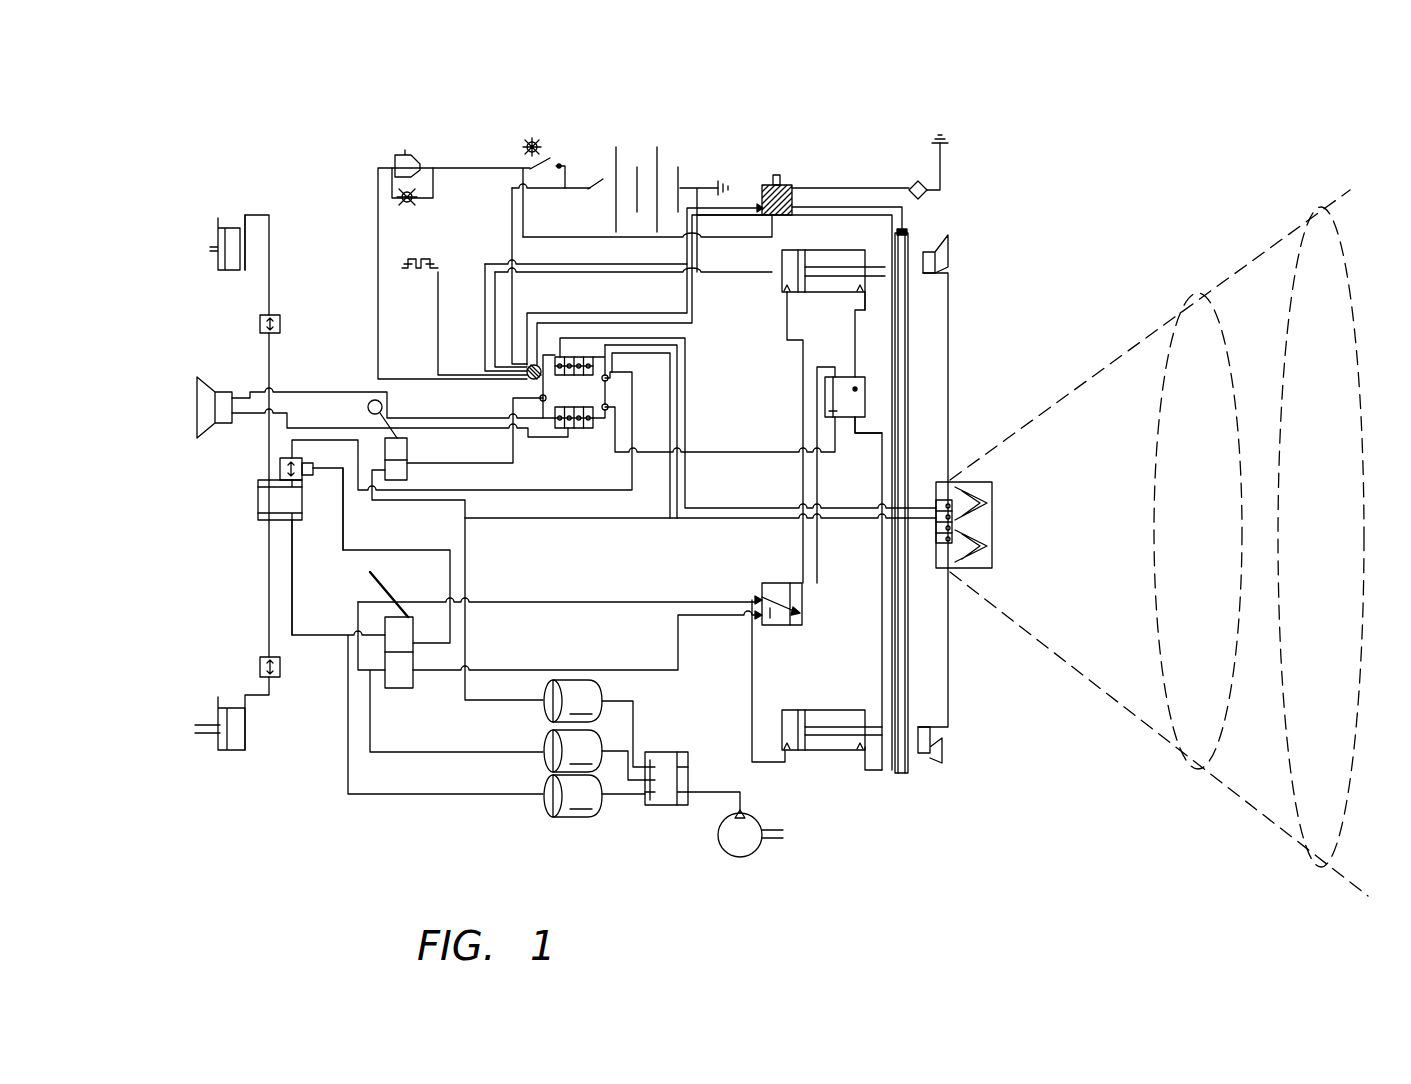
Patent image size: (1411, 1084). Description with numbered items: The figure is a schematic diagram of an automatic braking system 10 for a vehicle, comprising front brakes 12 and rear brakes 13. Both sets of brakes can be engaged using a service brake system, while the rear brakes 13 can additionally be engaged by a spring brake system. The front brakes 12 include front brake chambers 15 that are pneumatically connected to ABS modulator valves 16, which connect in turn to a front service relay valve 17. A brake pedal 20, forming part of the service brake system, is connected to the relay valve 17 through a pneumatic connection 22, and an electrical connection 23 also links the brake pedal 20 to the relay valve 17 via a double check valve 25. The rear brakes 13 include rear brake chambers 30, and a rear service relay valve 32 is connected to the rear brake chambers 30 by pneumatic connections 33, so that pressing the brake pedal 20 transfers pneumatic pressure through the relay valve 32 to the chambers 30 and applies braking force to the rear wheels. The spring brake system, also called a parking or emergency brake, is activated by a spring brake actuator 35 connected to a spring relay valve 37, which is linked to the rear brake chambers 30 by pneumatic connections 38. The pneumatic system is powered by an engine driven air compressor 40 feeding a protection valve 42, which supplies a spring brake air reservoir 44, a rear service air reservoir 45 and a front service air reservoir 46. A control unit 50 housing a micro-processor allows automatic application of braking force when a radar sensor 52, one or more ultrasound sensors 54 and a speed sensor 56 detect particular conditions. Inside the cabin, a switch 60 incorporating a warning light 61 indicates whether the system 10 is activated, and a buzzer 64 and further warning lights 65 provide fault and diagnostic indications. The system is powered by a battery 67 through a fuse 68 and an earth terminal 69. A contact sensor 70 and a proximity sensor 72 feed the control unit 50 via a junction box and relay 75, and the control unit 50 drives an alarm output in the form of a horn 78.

The braking system 10 is at (1084, 229).
The front brakes 12 is at (237, 762).
The rear brakes 13 is at (877, 779).
The front brake chambers 15 is at (228, 230).
The ABS modulator valves 16 is at (280, 315).
The front service relay valve 17 is at (258, 502).
The brake pedal 20 is at (370, 572).
The pneumatic connection 22 is at (287, 588).
The electrical connection 23 is at (343, 535).
The double check valve 25 is at (280, 461).
The rear brake chambers 30 is at (847, 256).
The rear service relay valve 32 is at (823, 585).
The pneumatic connections 33 is at (803, 342).
The spring brake actuator 35 is at (371, 400).
The spring relay valve 37 is at (857, 389).
The pneumatic connections 38 is at (857, 322).
The air compressor 40 is at (738, 857).
The protection valve 42 is at (670, 805).
The spring brake air reservoir 44 is at (573, 701).
The rear service air reservoir 45 is at (573, 751).
The front service air reservoir 46 is at (573, 796).
The control unit 50 is at (593, 395).
The radar sensor 52 is at (988, 543).
The ultrasound sensors 54 is at (949, 245).
The speed sensor 56 is at (410, 255).
The switch 60 is at (561, 163).
The warning light 61 is at (528, 141).
The buzzer 64 is at (405, 155).
The warning lights 65 is at (402, 195).
The battery 67 is at (660, 154).
The fuse 68 is at (596, 178).
The earth terminal 69 is at (718, 182).
The contact sensor 70 is at (903, 293).
The proximity sensor 72 is at (922, 198).
The junction box and relay 75 is at (792, 186).
The horn 78 is at (208, 378).